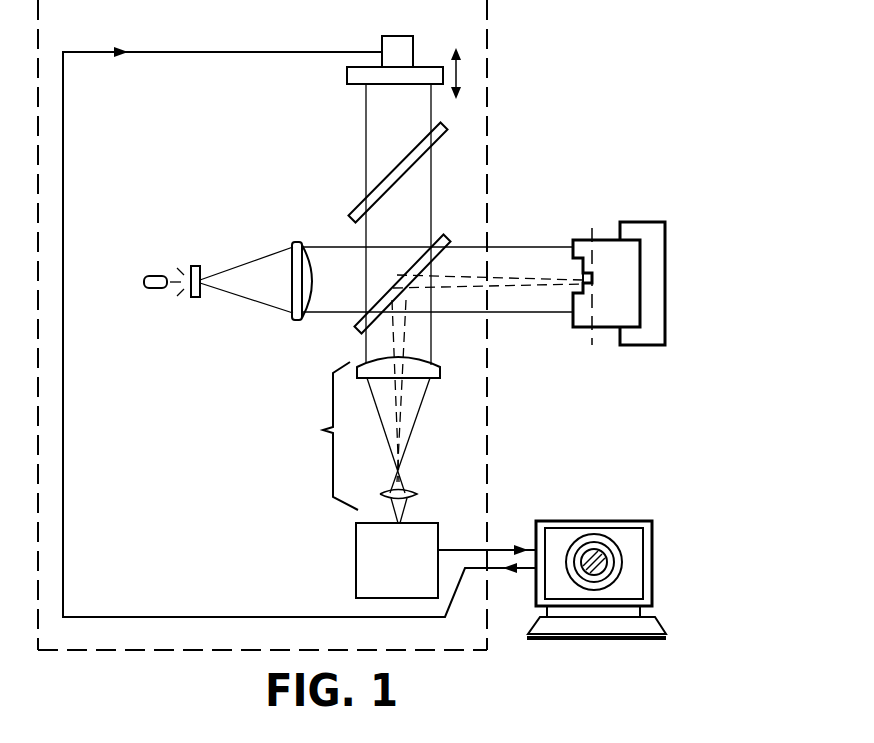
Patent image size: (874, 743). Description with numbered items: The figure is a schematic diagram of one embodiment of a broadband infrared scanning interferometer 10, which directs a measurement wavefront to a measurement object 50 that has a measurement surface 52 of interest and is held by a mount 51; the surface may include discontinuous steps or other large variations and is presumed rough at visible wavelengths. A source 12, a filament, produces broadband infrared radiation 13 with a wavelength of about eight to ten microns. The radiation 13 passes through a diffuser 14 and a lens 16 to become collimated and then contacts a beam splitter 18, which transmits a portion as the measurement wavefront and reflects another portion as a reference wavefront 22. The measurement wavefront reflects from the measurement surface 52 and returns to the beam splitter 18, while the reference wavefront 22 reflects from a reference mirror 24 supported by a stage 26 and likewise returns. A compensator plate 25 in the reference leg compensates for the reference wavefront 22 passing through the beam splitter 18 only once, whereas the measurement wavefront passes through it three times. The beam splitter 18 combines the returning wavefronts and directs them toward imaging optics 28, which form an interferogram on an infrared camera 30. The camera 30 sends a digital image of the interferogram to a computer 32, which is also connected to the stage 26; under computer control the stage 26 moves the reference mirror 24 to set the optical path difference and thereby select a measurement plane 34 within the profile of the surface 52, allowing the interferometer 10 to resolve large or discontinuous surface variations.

The broadband scanning interferometer 10 is at (487, 66).
The source 12 is at (145, 274).
The broadband infrared radiation 13 is at (260, 270).
The diffuser 14 is at (195, 301).
The lens 16 is at (291, 318).
The beam splitter 18 is at (352, 330).
The reference wavefront 22 is at (408, 212).
The reference mirror 24 is at (347, 73).
The compensator plate 25 is at (350, 212).
The stage 26 is at (381, 40).
The imaging optics 28 is at (360, 440).
The infrared camera 30 is at (356, 563).
The computer 32 is at (652, 561).
The measurement plane 34 is at (591, 224).
The measurement object 50 is at (612, 328).
The mount 51 is at (665, 276).
The measurement surface 52 is at (575, 298).